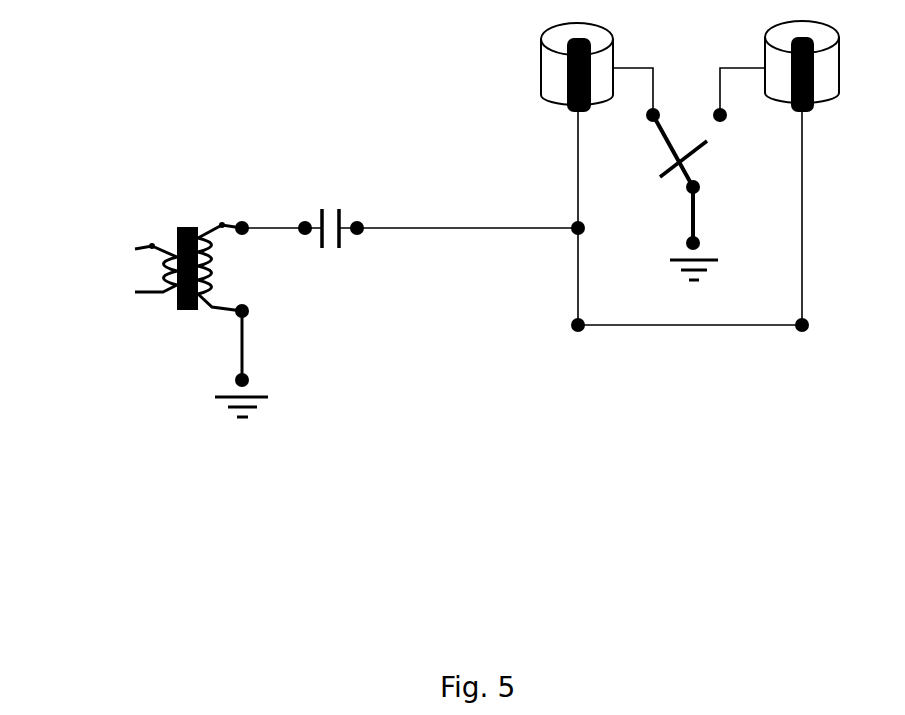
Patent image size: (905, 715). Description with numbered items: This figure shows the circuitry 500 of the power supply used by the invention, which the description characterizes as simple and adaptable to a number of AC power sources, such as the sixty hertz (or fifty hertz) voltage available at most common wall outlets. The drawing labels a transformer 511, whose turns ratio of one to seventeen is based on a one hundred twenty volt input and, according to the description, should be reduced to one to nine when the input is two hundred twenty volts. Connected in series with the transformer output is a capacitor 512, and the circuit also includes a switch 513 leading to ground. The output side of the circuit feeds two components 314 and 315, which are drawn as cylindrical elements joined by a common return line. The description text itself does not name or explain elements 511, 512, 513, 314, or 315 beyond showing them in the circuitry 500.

The power supply circuitry 500 is at (451, 229).
The transformer 511 is at (192, 315).
The capacitor 512 is at (328, 252).
The switch 513 is at (692, 156).
The first electrode 314 is at (537, 92).
The second electrode 315 is at (838, 90).